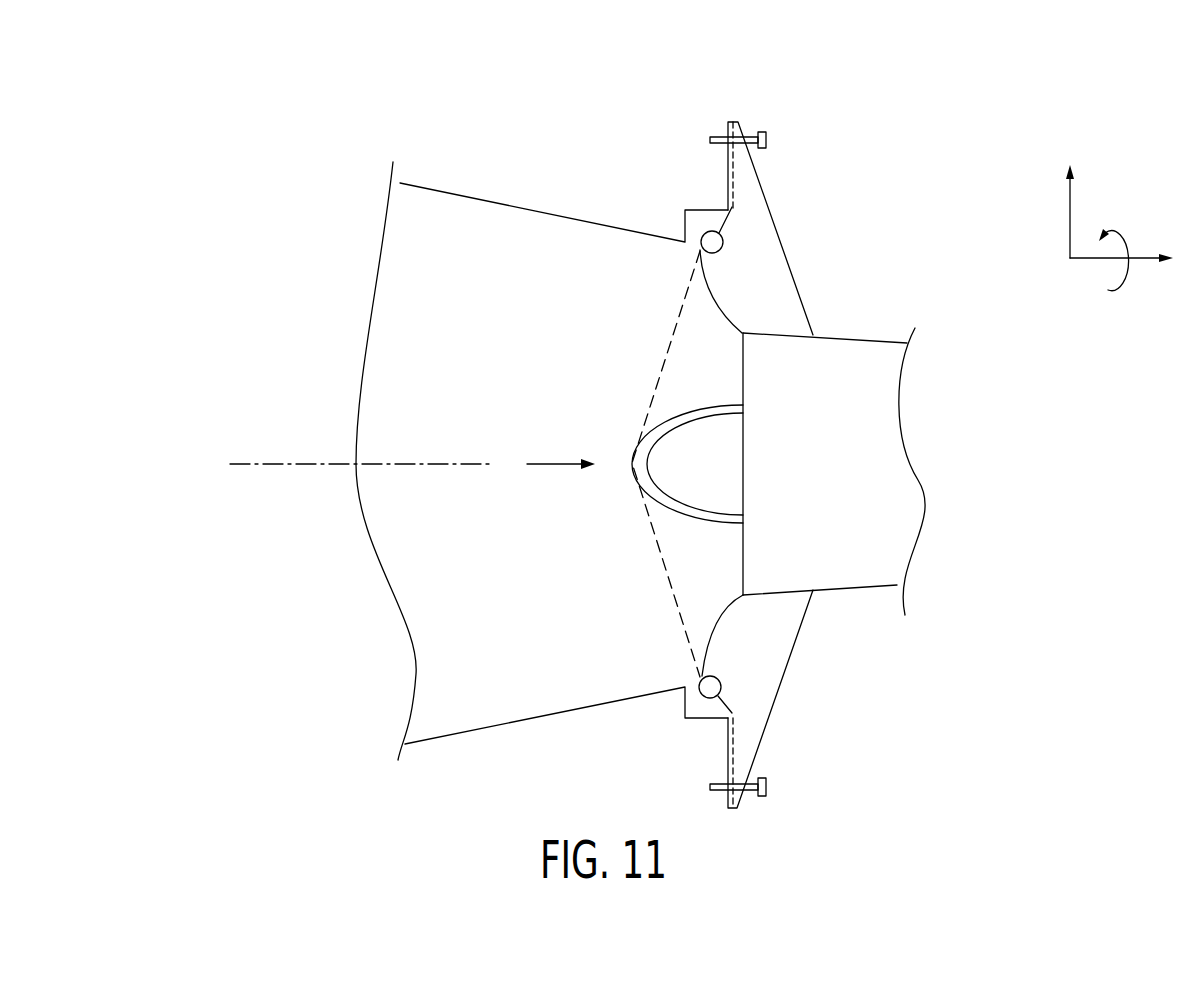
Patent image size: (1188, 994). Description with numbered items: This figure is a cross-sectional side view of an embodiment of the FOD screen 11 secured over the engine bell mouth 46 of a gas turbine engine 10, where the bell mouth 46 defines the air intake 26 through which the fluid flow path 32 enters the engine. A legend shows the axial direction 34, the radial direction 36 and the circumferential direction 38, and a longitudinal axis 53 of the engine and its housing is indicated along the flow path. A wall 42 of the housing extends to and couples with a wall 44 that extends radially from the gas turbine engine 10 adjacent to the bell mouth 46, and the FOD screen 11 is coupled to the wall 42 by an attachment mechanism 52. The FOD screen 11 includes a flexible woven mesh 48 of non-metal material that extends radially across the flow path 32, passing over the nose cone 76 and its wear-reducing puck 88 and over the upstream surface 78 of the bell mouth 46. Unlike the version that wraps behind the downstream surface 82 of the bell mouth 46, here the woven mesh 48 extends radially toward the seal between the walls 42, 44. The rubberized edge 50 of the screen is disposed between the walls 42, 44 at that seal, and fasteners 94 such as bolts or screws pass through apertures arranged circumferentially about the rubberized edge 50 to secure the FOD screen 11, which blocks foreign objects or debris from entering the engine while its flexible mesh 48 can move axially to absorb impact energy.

The gas turbine engine 10 is at (870, 625).
The FOD screen 11 is at (625, 370).
The air intake 26 is at (724, 363).
The fluid flow path 32 is at (553, 467).
The axial axis or direction 34 is at (1097, 262).
The radial axis or direction 36 is at (1068, 219).
The circumferential axis or direction 38 is at (1129, 240).
The wall 42 is at (502, 203).
The wall 44 is at (783, 242).
The bell mouth 46 is at (712, 297).
The woven mesh 48 is at (669, 347).
The rubberized edge 50 is at (733, 773).
The attachment mechanism 52 is at (742, 112).
The longitudinal axis 53 is at (278, 463).
The nose cone 76 is at (678, 423).
The upstream surface 78 is at (720, 615).
The downstream surface 82 is at (712, 635).
The puck 88 is at (632, 463).
The fasteners 94 is at (767, 139).